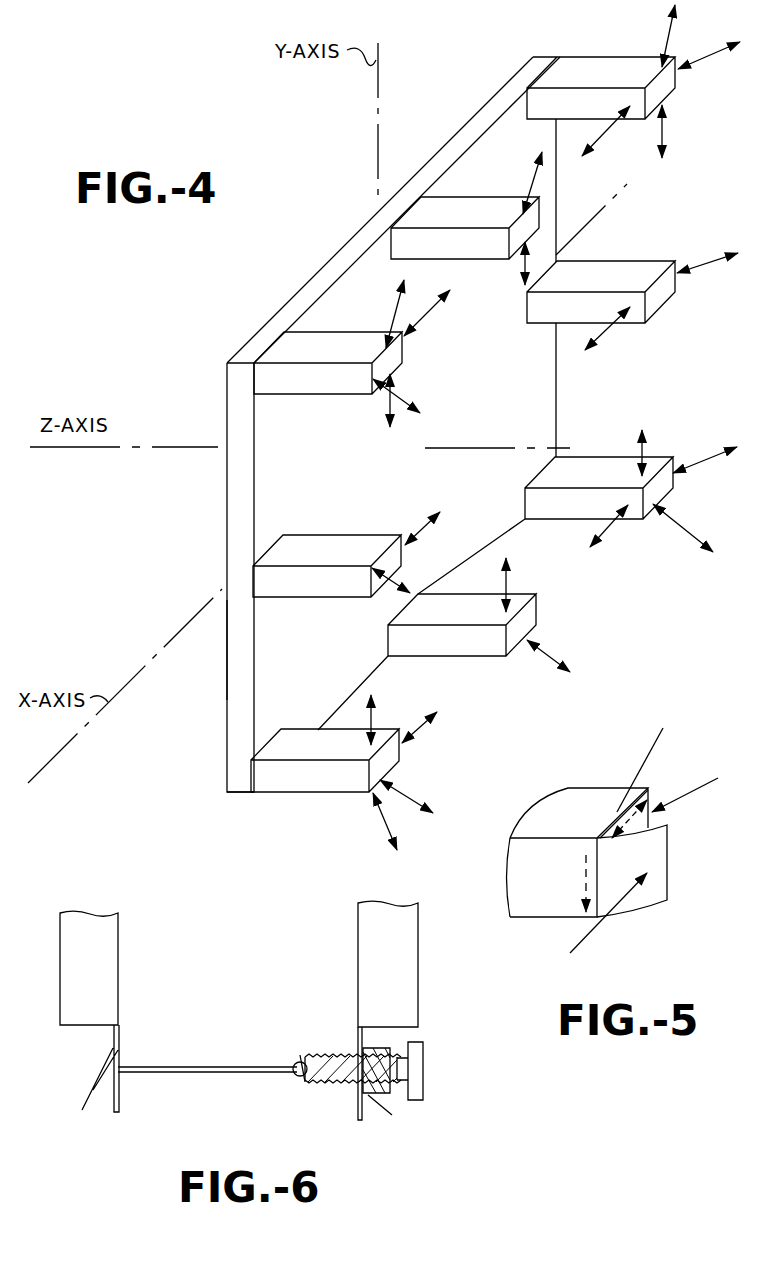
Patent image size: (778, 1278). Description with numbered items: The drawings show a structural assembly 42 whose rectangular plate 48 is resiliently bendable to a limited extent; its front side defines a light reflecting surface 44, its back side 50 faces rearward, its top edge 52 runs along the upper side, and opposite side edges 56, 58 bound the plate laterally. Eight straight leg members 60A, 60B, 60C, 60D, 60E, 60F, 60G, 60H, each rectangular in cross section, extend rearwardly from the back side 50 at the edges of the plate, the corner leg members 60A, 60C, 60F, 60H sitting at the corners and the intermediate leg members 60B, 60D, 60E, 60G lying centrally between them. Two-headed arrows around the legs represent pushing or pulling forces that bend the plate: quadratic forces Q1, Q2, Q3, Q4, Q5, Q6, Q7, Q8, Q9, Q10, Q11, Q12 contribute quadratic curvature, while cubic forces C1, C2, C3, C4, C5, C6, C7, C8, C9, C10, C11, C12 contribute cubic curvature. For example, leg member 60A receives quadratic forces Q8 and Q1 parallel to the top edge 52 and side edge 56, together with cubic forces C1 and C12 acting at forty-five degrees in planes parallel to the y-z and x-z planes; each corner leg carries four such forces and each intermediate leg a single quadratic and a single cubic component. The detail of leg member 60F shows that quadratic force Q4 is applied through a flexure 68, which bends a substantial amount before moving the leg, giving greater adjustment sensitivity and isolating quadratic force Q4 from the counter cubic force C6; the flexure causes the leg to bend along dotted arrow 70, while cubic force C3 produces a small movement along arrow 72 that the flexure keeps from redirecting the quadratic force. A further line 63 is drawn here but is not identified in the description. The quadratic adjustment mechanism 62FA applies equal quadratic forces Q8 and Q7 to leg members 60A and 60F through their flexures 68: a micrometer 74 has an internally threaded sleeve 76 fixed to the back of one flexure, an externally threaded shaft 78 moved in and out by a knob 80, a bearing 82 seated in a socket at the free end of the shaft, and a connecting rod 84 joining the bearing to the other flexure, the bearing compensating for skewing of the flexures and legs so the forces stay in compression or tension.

In FIG. 4, the structural assembly 42 is at (212, 810).
In FIG. 4, the light reflecting surface 44 is at (230, 668).
In FIG. 4, the rectangular plate 48 is at (226, 718).
In FIG. 4, the back side 50 is at (263, 707).
In FIG. 4, the top edge 52 is at (342, 248).
In FIG. 4, the side edge 56 is at (228, 500).
In FIG. 4, the side edge 58 is at (558, 180).
In FIG. 4, the leg member 60A is at (325, 383).
In FIG. 6, the leg member 60A is at (110, 942).
In FIG. 4, the leg member 60B is at (320, 585).
In FIG. 4, the leg member 60C is at (307, 790).
In FIG. 4, the leg member 60D is at (447, 197).
In FIG. 4, the leg member 60E is at (463, 603).
In FIG. 4, the leg member 60F is at (630, 62).
In FIG. 5, the leg member 60F is at (545, 910).
In FIG. 6, the leg member 60F is at (365, 948).
In FIG. 4, the leg member 60G is at (562, 310).
In FIG. 4, the leg member 60H is at (615, 462).
In FIG. 6, the quadratic adjustment mechanism 62FA is at (243, 1103).
In FIG. 5, the adjustment axis 63 is at (650, 738).
In FIG. 5, the flexure 68 is at (667, 878).
In FIG. 6, the flexure 68 is at (120, 1047).
In FIG. 5, the dotted arrow 70 is at (608, 828).
In FIG. 5, the arrow 72 is at (585, 868).
In FIG. 6, the micrometer 74 is at (343, 1090).
In FIG. 6, the internally threaded sleeve 76 is at (368, 1103).
In FIG. 6, the externally threaded shaft 78 is at (300, 1055).
In FIG. 6, the knob 80 is at (420, 1050).
In FIG. 6, the bearing 82 is at (295, 1083).
In FIG. 6, the connecting rod 84 is at (217, 1065).
In FIG. 4, the cubic force C1 is at (397, 313).
In FIG. 4, the cubic force C2 is at (525, 178).
In FIG. 4, the cubic force C3 is at (677, 27).
In FIG. 4, the cubic force C4 is at (688, 67).
In FIG. 4, the cubic force C5 is at (690, 270).
In FIG. 4, the cubic force C6 is at (707, 453).
In FIG. 5, the cubic force C6 is at (692, 790).
In FIG. 4, the cubic force C7 is at (683, 523).
In FIG. 4, the cubic force C8 is at (543, 657).
In FIG. 4, the cubic force C9 is at (402, 790).
In FIG. 4, the cubic force C10 is at (377, 813).
In FIG. 4, the cubic force C11 is at (390, 600).
In FIG. 4, the cubic force C12 is at (405, 393).
In FIG. 4, the quadratic force Q1 is at (387, 404).
In FIG. 4, the quadratic force Q2 is at (367, 713).
In FIG. 4, the quadratic force Q3 is at (437, 728).
In FIG. 4, the quadratic force Q4 is at (625, 537).
In FIG. 5, the quadratic force Q4 is at (630, 898).
In FIG. 4, the quadratic force Q5 is at (644, 448).
In FIG. 4, the quadratic force Q6 is at (667, 131).
In FIG. 4, the quadratic force Q7 is at (612, 127).
In FIG. 4, the quadratic force Q8 is at (425, 318).
In FIG. 4, the quadratic force Q9 is at (510, 573).
In FIG. 4, the quadratic force Q10 is at (523, 267).
In FIG. 4, the quadratic force Q11 is at (608, 334).
In FIG. 4, the quadratic force Q12 is at (412, 500).